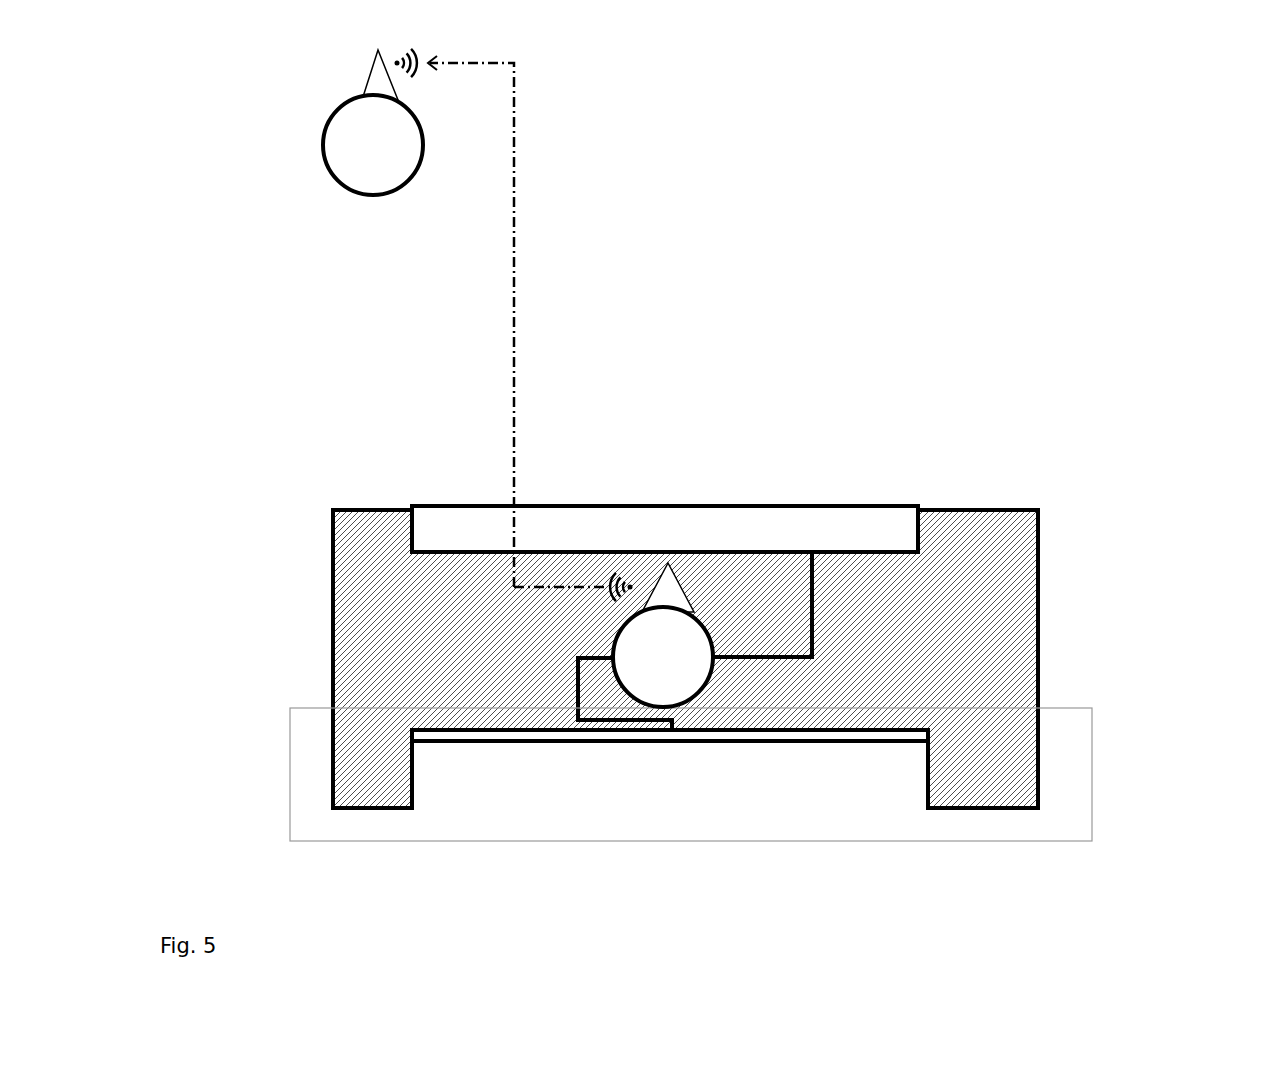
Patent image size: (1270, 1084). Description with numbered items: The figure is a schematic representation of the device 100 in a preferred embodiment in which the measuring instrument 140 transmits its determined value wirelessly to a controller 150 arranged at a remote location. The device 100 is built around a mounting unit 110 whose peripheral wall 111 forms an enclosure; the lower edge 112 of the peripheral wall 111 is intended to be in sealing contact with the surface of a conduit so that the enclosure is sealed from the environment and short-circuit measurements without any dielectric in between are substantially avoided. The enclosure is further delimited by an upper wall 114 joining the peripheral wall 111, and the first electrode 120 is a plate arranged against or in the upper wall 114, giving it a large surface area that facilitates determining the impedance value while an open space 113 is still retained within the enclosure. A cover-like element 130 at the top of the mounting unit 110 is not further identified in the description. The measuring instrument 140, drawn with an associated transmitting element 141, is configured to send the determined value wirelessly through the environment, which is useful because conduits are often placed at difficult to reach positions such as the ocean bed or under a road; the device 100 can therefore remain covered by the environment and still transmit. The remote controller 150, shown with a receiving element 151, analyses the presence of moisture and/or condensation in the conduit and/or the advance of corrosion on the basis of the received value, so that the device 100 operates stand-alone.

The device 100 is at (209, 297).
The mounting unit 110 is at (341, 617).
The peripheral wall 111 is at (333, 788).
The lower edge 112 is at (990, 808).
The open space 113 is at (680, 808).
The upper wall 114 is at (1092, 775).
The first electrode 120 is at (672, 742).
The top cover 130 is at (917, 508).
The measuring instrument 140 is at (663, 657).
The sensor transceiver 141 is at (668, 586).
The controller 150 is at (373, 145).
The external transceiver 151 is at (365, 78).